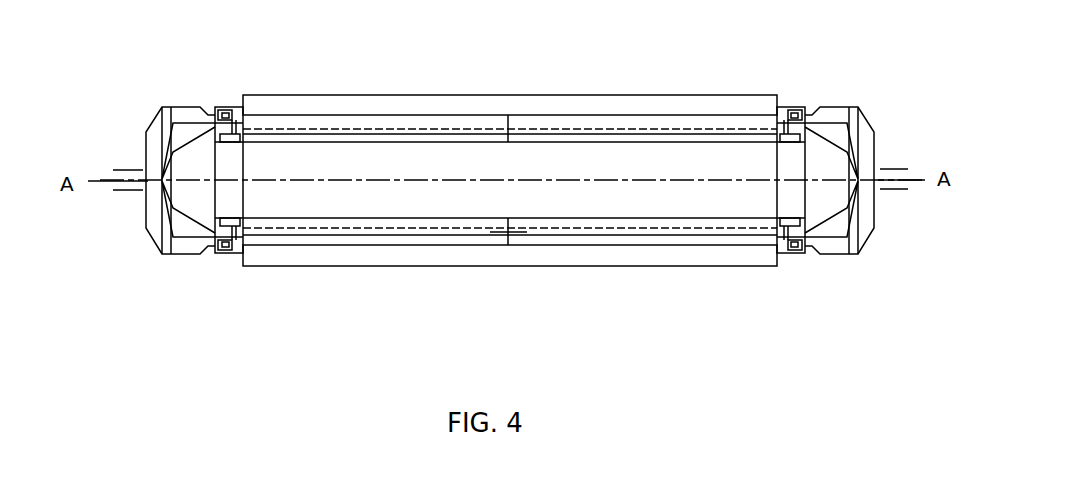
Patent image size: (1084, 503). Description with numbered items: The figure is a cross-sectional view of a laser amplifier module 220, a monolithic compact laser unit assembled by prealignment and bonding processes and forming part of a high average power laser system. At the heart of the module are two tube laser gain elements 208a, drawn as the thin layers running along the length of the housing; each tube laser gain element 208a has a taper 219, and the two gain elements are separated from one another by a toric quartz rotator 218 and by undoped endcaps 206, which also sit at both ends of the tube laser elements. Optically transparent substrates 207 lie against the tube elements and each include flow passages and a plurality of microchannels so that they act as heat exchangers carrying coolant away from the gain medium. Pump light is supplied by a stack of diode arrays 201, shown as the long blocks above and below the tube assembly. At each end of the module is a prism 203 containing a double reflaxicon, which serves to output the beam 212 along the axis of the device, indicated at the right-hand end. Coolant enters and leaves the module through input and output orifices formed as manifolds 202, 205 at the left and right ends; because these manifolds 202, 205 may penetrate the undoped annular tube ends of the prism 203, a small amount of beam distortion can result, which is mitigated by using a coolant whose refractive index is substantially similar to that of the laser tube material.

The stack of diode arrays 201 is at (531, 95).
The manifold 202 is at (214, 127).
The prism 203 is at (851, 104).
The manifold 205 is at (806, 127).
The endcap 206 is at (523, 233).
The optically transparent substrate 207 is at (737, 219).
The tube laser gain element 208a is at (390, 128).
The beam 212 is at (910, 186).
The toric quartz rotator 218 is at (507, 142).
The taper 219 is at (697, 140).
The laser amplifier module 220 is at (328, 312).